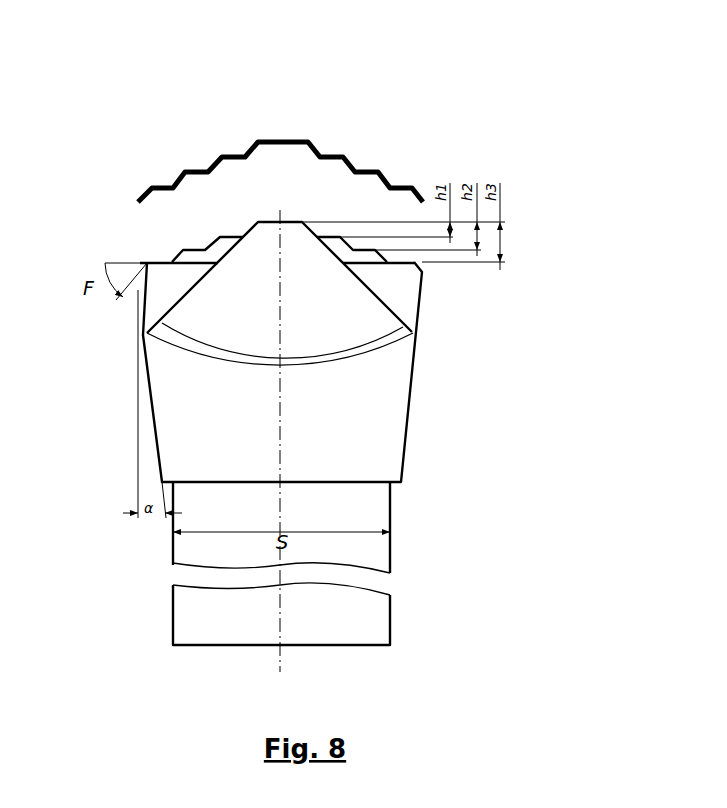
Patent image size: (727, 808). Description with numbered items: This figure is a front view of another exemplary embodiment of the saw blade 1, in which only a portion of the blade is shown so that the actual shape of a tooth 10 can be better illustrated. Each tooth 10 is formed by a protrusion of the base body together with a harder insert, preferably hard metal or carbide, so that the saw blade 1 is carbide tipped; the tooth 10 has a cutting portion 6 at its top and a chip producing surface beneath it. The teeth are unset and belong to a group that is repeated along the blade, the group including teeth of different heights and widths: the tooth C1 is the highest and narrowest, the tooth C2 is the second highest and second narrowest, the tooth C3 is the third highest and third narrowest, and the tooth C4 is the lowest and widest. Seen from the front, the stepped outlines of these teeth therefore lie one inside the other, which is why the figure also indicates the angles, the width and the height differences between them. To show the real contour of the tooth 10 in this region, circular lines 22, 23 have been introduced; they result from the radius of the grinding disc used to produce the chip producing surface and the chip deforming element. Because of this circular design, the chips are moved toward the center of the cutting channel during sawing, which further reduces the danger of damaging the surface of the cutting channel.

The saw blade 1 is at (273, 88).
The cutting portion 6 is at (265, 222).
The tooth 10 is at (288, 240).
The circular line 22 is at (318, 340).
The circular line 23 is at (318, 340).
The tooth C1 is at (412, 334).
The tooth C2 is at (368, 274).
The tooth C3 is at (378, 266).
The tooth C4 is at (373, 317).